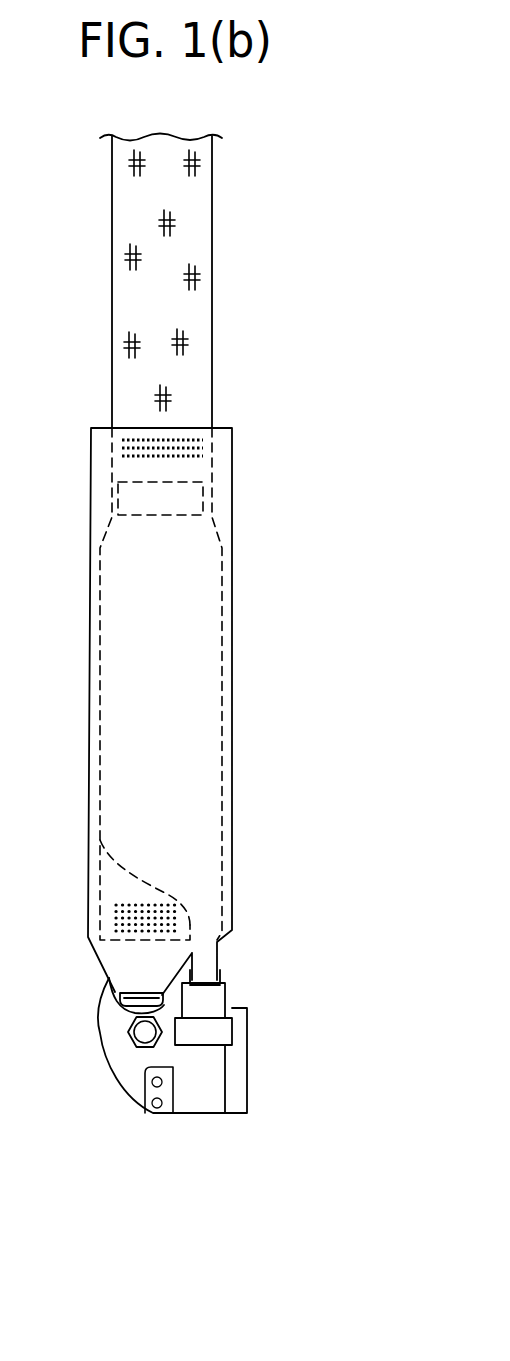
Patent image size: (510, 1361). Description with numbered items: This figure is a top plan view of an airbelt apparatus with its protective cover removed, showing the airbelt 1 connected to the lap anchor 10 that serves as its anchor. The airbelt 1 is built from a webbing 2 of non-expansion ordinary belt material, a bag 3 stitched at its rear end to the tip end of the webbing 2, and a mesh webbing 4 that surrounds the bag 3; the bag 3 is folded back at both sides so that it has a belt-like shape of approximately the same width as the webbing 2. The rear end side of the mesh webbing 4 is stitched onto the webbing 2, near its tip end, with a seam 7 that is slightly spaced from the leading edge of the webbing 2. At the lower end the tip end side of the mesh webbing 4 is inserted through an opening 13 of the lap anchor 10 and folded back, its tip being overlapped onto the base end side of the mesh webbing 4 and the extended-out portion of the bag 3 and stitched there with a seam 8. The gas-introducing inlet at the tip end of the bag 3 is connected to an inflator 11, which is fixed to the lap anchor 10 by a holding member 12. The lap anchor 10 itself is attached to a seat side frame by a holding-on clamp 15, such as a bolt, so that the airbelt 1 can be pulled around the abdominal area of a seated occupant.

The airbelt 1 is at (258, 467).
The webbing 2 is at (198, 205).
The bag 3 is at (230, 609).
The mesh webbing 4 is at (231, 710).
The seam 7 is at (205, 442).
The seam 8 is at (113, 917).
The lap anchor 10 is at (133, 1085).
The inflator 11 is at (213, 997).
The holding member 12 is at (220, 1030).
The opening 13 is at (120, 1012).
The holding-on clamp 15 is at (131, 1042).